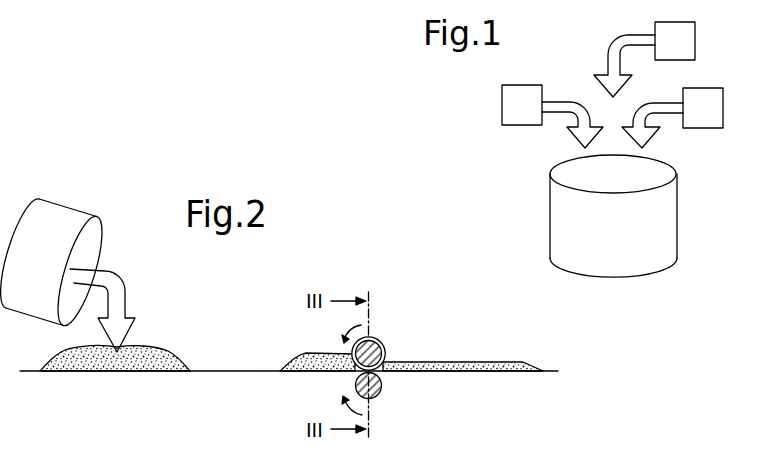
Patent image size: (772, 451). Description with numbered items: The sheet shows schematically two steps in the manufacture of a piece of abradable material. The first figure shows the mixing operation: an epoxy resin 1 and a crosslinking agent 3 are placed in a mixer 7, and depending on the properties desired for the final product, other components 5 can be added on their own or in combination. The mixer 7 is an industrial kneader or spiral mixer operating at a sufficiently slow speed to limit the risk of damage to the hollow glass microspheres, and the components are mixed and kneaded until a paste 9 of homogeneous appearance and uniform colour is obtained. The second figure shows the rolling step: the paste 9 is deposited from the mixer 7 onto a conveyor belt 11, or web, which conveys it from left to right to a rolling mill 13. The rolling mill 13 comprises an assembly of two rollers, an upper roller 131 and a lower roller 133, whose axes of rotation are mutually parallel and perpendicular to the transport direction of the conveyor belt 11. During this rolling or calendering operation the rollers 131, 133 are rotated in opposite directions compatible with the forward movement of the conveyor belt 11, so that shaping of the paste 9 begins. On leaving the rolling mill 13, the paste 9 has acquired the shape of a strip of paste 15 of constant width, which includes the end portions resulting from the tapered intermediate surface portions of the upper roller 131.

In FIG. 1, the epoxy resin 1 is at (514, 119).
In FIG. 1, the crosslinking agent 3 is at (695, 122).
In FIG. 1, the other components 5 is at (667, 55).
In FIG. 1, the mixer 7 is at (677, 222).
In FIG. 2, the mixer 7 is at (60, 205).
In FIG. 2, the paste 9 is at (160, 347).
In FIG. 2, the conveyor belt 11 is at (218, 371).
In FIG. 2, the rolling mill 13 is at (406, 324).
In FIG. 2, the upper roller 131 is at (381, 343).
In FIG. 2, the lower roller 133 is at (381, 386).
In FIG. 2, the strip of paste 15 is at (458, 362).